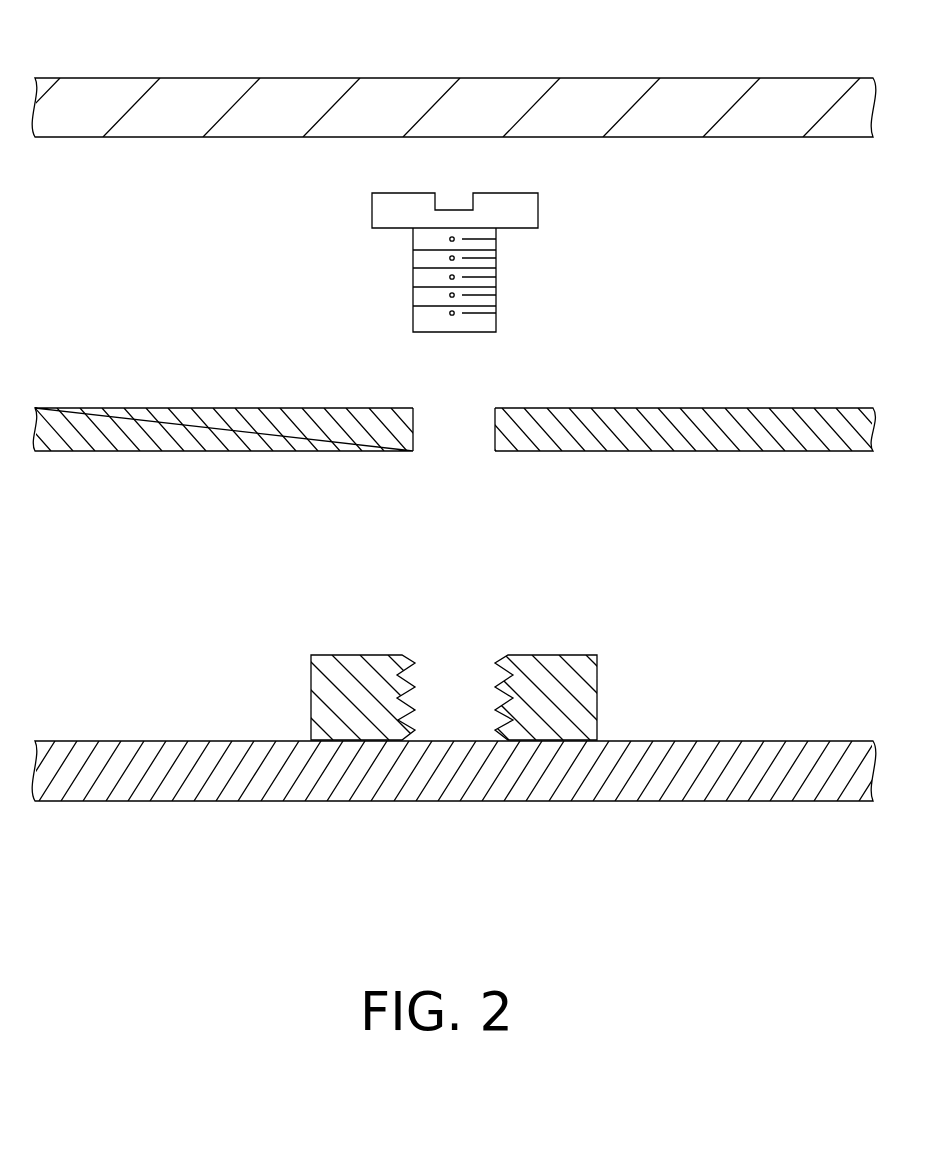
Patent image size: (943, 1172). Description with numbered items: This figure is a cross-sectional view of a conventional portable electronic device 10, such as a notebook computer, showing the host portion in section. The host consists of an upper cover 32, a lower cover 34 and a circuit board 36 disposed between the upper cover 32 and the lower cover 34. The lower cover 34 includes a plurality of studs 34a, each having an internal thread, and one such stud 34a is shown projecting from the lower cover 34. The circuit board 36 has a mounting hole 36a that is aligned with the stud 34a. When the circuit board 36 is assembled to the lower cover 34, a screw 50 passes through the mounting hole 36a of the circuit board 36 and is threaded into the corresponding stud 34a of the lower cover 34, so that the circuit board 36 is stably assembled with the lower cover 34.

The portable electronic device 10 is at (853, 921).
The upper cover 32 is at (787, 92).
The lower cover 34 is at (725, 775).
The stud 34a is at (311, 697).
The circuit board 36 is at (732, 407).
The mounting hole 36a is at (482, 410).
The screw 50 is at (477, 273).